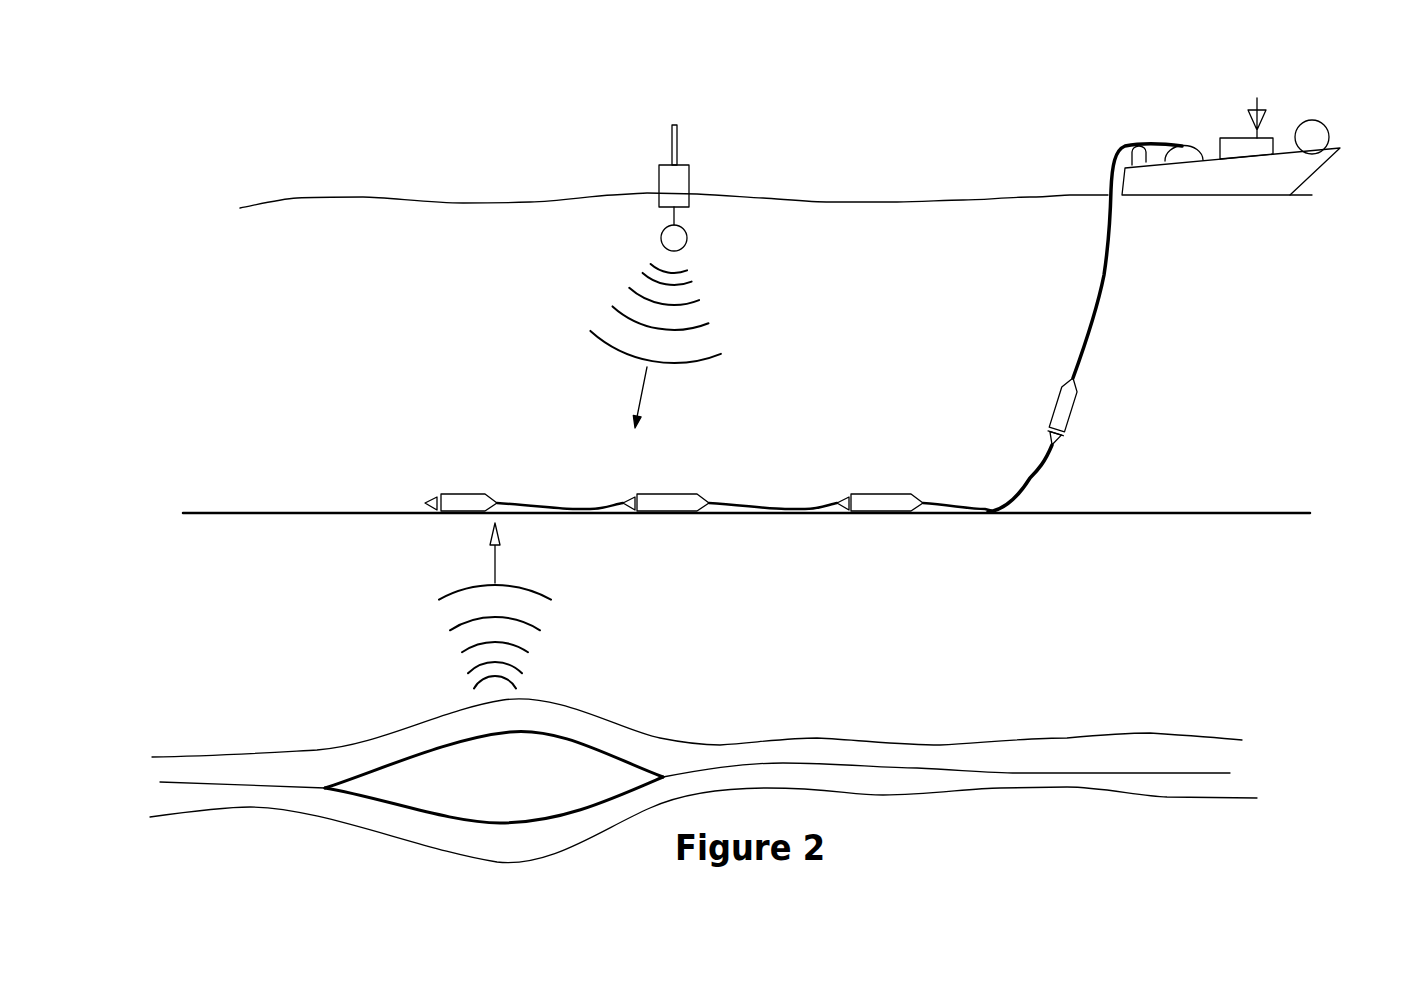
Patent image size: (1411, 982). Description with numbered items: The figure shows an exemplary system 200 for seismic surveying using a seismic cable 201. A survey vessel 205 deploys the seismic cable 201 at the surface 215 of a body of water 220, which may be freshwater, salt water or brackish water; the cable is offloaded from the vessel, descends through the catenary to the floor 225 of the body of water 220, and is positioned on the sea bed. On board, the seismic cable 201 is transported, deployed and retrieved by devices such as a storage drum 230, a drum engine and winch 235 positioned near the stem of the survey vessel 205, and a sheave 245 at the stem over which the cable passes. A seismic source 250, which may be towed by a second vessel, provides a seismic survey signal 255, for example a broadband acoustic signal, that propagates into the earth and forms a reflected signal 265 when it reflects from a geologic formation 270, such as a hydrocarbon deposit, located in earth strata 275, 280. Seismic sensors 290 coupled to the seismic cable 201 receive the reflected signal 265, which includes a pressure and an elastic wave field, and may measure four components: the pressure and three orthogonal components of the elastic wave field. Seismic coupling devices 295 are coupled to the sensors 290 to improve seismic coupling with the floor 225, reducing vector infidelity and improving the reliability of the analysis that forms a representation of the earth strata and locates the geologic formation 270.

The system for seismic surveying 200 is at (930, 103).
The seismic cable 201 is at (1105, 270).
The survey vessel 205 is at (1310, 178).
The surface 215 is at (336, 197).
The body of water 220 is at (330, 329).
The floor 225 is at (268, 512).
The storage drum 230 is at (1330, 133).
The drum engine and winch 235 is at (1200, 156).
The sheave 245 is at (1117, 150).
The seismic source 250 is at (683, 165).
The seismic survey signal 255 is at (745, 338).
The reflected signal 265 is at (567, 656).
The geologic formation 270 is at (501, 784).
The earth stratum 275 is at (503, 855).
The earth stratum 280 is at (521, 724).
The seismic sensor 290 is at (460, 494).
The seismic coupling device 295 is at (437, 495).